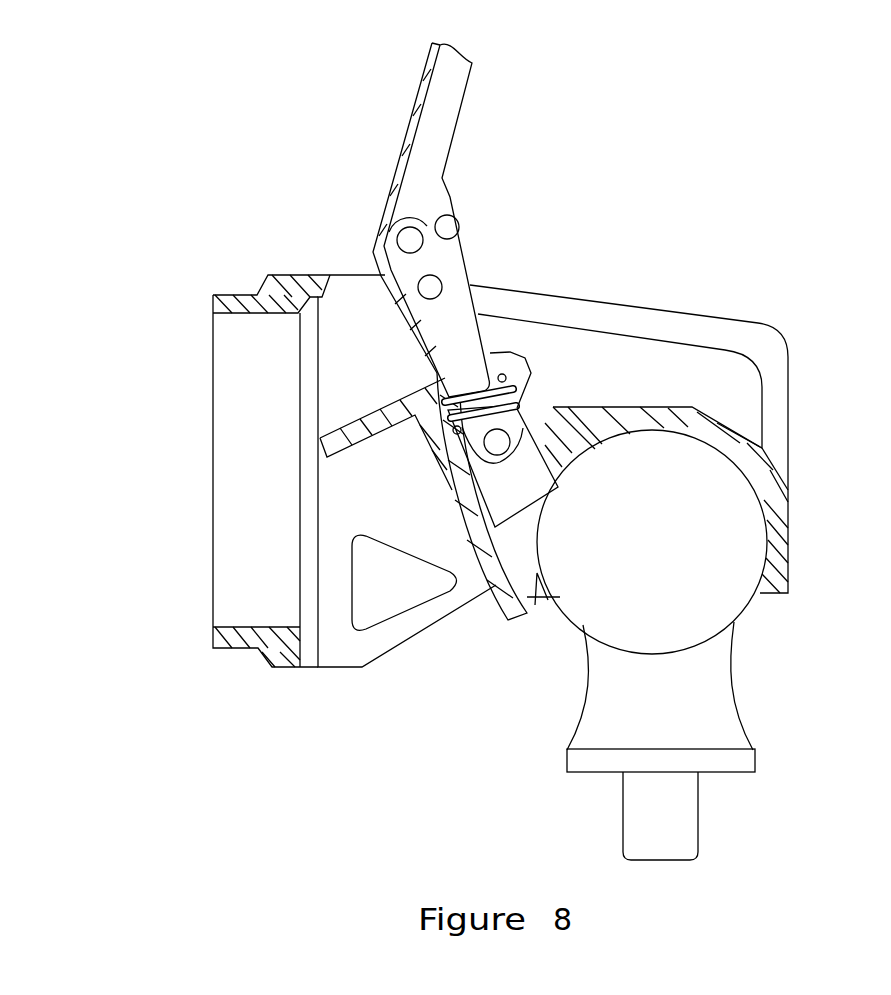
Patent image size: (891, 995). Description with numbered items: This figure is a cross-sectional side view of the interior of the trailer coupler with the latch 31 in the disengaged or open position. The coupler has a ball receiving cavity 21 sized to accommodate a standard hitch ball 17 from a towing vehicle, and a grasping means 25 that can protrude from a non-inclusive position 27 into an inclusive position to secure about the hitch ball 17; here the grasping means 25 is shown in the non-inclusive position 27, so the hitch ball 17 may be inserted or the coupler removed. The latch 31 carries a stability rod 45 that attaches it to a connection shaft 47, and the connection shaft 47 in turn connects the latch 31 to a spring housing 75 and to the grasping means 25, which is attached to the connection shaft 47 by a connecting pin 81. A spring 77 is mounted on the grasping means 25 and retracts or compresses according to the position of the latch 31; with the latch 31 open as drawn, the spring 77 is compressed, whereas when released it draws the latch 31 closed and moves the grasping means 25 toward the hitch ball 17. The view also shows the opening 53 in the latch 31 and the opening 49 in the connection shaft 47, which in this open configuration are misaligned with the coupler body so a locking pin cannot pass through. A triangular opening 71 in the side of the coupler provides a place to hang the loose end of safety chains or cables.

The hitch ball 17 is at (717, 580).
The ball receiving cavity 21 is at (542, 575).
The grasping means 25 is at (508, 515).
The non-inclusive position 27 is at (480, 480).
The latch 31 is at (443, 100).
The stability rod 45 is at (400, 238).
The connection shaft 47 is at (407, 267).
The opening 49 is at (441, 283).
The first opening 53 is at (456, 222).
The triangular opening 71 is at (385, 600).
The spring housing 75 is at (543, 388).
The spring 77 is at (553, 407).
The connecting pin 81 is at (545, 487).